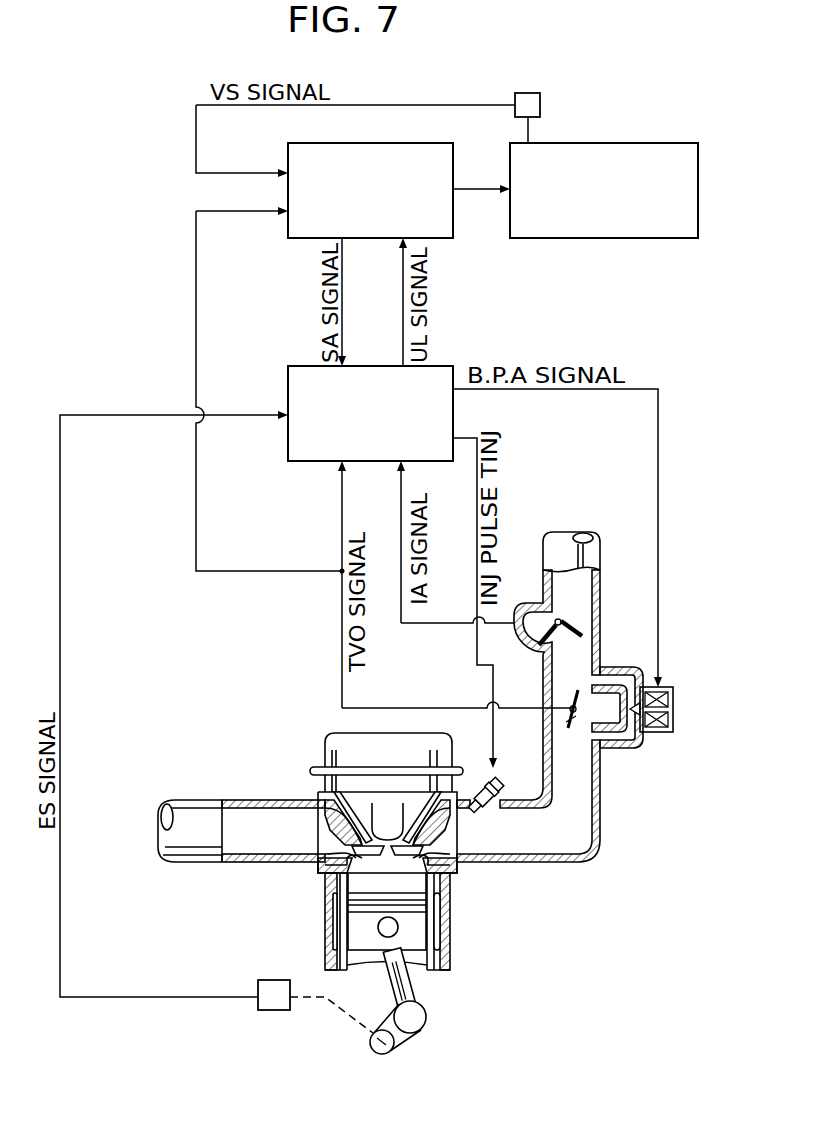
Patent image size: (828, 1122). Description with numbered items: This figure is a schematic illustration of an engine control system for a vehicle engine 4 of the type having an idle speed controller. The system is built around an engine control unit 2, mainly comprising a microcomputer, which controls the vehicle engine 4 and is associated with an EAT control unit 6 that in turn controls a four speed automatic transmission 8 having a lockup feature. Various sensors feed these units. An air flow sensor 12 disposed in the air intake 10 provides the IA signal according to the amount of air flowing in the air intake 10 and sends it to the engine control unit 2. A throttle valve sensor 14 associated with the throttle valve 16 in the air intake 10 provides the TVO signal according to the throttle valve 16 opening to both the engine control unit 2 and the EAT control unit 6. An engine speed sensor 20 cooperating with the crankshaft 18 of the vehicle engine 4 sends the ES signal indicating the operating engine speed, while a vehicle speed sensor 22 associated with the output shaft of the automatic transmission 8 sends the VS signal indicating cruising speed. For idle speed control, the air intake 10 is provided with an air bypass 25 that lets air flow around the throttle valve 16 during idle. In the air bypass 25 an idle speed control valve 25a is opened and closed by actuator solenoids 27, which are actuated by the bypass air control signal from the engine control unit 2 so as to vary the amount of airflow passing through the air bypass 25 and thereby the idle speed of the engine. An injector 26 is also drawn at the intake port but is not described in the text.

The engine control unit 2 is at (453, 366).
The vehicle engine 4 is at (453, 907).
The EAT control unit 6 is at (453, 152).
The automatic transmission 8 is at (610, 143).
The air intake 10 is at (572, 847).
The air flow sensor 12 is at (557, 614).
The throttle valve sensor 14 is at (567, 703).
The throttle valve 16 is at (567, 722).
The crankshaft 18 is at (387, 1053).
The engine speed sensor 20 is at (272, 980).
The vehicle speed sensor 22 is at (532, 93).
The air bypass 25 is at (623, 736).
The idle speed control valve 25a is at (643, 742).
The fuel injector 26 is at (485, 775).
The actuator solenoids 27 is at (675, 688).